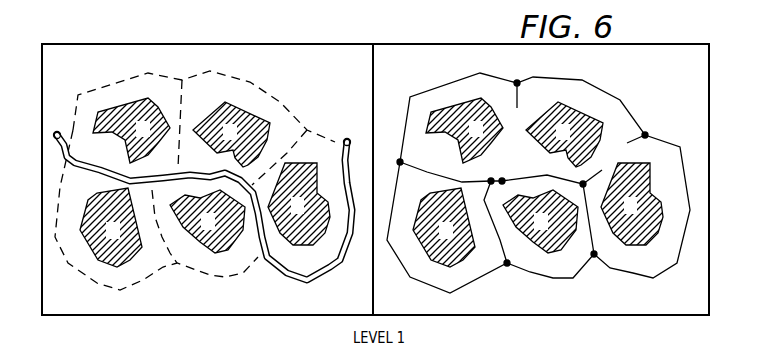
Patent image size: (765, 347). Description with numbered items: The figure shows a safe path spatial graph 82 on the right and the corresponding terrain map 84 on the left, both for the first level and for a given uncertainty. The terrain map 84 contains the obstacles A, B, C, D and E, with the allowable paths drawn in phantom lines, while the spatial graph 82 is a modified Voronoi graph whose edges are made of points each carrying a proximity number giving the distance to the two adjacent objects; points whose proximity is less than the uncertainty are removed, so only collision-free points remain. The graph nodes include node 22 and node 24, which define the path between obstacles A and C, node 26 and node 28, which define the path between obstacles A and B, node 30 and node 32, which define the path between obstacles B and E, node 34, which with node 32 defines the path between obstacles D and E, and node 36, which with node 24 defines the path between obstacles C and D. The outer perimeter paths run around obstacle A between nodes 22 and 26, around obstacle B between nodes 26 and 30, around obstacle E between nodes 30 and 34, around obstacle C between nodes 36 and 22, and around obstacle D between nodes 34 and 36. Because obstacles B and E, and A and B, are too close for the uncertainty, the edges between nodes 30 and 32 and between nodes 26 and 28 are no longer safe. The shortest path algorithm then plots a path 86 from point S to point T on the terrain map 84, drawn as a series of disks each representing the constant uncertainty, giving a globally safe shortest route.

The node 22 is at (400, 162).
The node 24 is at (502, 181).
The node 26 is at (517, 83).
The node 28 is at (502, 182).
The node 30 is at (645, 135).
The node 32 is at (612, 155).
The node 34 is at (594, 254).
The node 36 is at (507, 263).
The safe path spatial graph 82 is at (431, 47).
The terrain map 84 is at (298, 44).
The path 86 is at (281, 277).